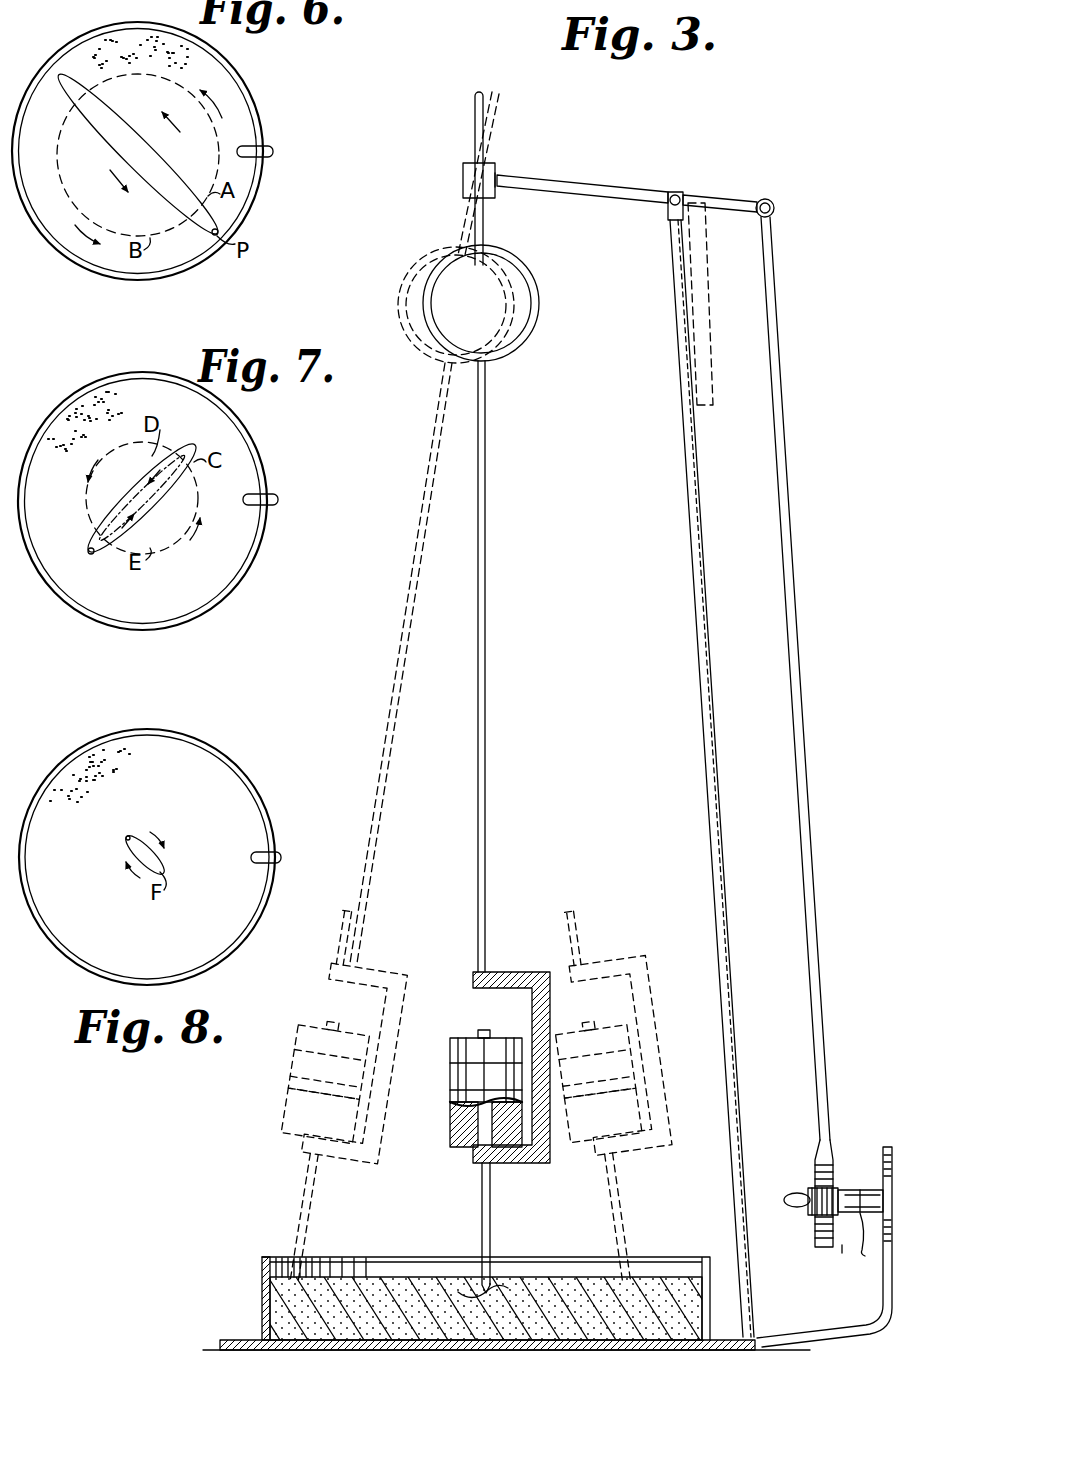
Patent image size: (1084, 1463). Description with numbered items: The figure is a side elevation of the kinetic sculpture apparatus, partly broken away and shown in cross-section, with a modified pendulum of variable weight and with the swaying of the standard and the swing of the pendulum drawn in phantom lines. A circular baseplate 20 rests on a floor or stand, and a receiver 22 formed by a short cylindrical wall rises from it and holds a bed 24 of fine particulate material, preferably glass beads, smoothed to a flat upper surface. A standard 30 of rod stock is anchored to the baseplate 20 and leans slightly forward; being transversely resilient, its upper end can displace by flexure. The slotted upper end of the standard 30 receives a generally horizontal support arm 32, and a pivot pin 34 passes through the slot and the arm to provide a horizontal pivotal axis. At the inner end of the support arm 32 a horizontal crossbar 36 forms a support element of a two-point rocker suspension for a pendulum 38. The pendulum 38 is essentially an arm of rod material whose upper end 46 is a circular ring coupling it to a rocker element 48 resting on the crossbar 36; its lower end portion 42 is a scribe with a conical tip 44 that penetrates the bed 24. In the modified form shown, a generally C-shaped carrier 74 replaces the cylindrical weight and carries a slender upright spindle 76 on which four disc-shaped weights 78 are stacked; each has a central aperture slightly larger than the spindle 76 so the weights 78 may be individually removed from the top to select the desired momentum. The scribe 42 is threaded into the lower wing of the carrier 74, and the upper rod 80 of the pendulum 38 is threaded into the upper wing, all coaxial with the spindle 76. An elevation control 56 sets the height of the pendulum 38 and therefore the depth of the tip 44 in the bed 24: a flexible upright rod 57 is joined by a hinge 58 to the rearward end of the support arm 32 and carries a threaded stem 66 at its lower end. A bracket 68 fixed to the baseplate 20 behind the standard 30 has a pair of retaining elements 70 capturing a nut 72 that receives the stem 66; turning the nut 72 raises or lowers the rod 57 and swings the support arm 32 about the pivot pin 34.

In FIG. 3, the baseplate 20 is at (220, 1340).
In FIG. 6, the receiver 22 is at (258, 200).
In FIG. 7, the receiver 22 is at (115, 626).
In FIG. 8, the receiver 22 is at (220, 742).
In FIG. 3, the receiver 22 is at (262, 1283).
In FIG. 6, the bed 24 is at (125, 38).
In FIG. 7, the bed 24 is at (86, 401).
In FIG. 8, the bed 24 is at (72, 770).
In FIG. 3, the bed 24 is at (386, 1276).
In FIG. 3, the standard 30 is at (712, 395).
In FIG. 6, the support arm 32 is at (250, 146).
In FIG. 7, the support arm 32 is at (260, 494).
In FIG. 8, the support arm 32 is at (252, 852).
In FIG. 3, the support arm 32 is at (570, 186).
In FIG. 3, the pivot pin 34 is at (674, 190).
In FIG. 3, the crossbar 36 is at (466, 164).
In FIG. 3, the pendulum 38 is at (490, 690).
In FIG. 3, the lower end portion (scribe) 42 is at (480, 1188).
In FIG. 3, the conical tip 44 is at (456, 1285).
In FIG. 3, the upper end (ring) 46 is at (515, 340).
In FIG. 3, the rocker element 48 is at (484, 232).
In FIG. 3, the elevation control 56 is at (855, 1142).
In FIG. 3, the flexible upright rod 57 is at (824, 680).
In FIG. 3, the hinge 58 is at (776, 201).
In FIG. 3, the threaded stem 66 is at (832, 1170).
In FIG. 3, the bracket 68 is at (882, 1294).
In FIG. 3, the retaining elements 70 is at (858, 1262).
In FIG. 3, the nut 72 is at (785, 1212).
In FIG. 3, the C-shaped carrier 74 is at (398, 944).
In FIG. 3, the spindle 76 is at (475, 1024).
In FIG. 3, the disc-shaped weights 78 is at (450, 1130).
In FIG. 3, the upper rod 80 is at (500, 596).